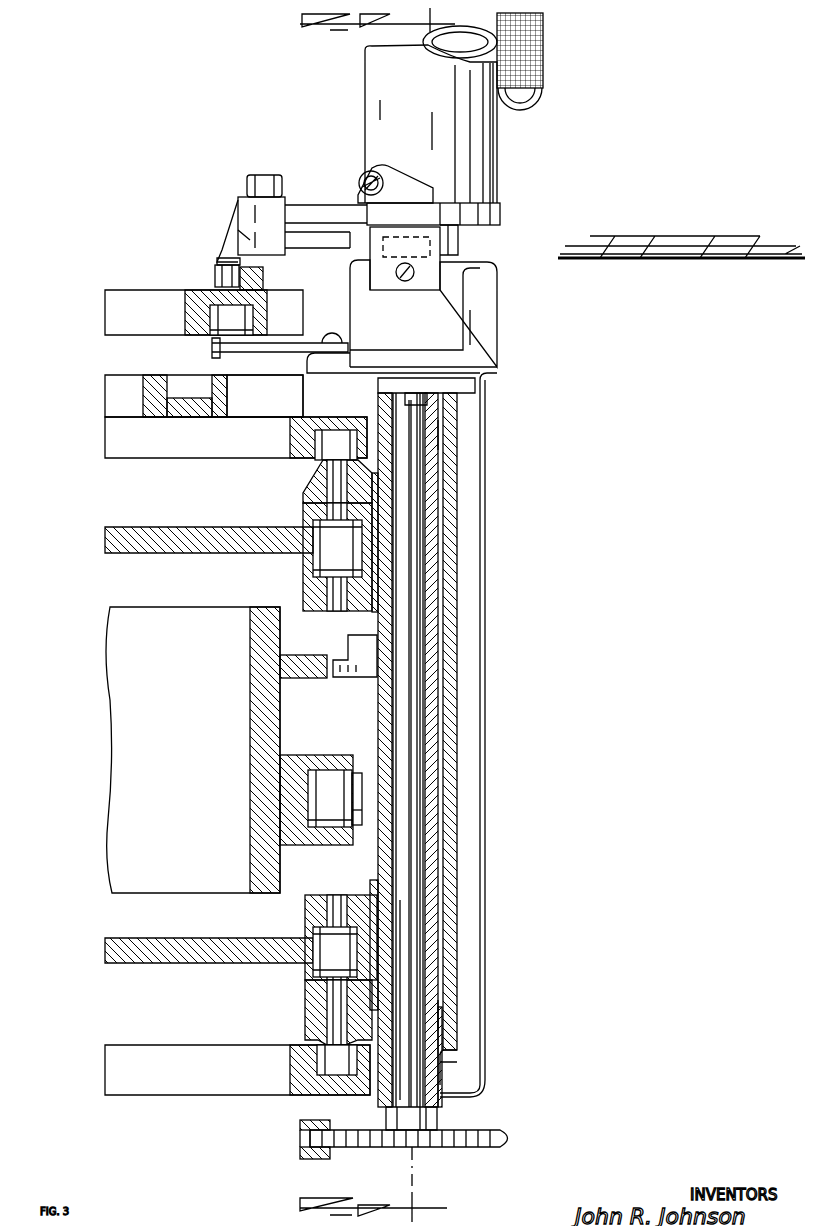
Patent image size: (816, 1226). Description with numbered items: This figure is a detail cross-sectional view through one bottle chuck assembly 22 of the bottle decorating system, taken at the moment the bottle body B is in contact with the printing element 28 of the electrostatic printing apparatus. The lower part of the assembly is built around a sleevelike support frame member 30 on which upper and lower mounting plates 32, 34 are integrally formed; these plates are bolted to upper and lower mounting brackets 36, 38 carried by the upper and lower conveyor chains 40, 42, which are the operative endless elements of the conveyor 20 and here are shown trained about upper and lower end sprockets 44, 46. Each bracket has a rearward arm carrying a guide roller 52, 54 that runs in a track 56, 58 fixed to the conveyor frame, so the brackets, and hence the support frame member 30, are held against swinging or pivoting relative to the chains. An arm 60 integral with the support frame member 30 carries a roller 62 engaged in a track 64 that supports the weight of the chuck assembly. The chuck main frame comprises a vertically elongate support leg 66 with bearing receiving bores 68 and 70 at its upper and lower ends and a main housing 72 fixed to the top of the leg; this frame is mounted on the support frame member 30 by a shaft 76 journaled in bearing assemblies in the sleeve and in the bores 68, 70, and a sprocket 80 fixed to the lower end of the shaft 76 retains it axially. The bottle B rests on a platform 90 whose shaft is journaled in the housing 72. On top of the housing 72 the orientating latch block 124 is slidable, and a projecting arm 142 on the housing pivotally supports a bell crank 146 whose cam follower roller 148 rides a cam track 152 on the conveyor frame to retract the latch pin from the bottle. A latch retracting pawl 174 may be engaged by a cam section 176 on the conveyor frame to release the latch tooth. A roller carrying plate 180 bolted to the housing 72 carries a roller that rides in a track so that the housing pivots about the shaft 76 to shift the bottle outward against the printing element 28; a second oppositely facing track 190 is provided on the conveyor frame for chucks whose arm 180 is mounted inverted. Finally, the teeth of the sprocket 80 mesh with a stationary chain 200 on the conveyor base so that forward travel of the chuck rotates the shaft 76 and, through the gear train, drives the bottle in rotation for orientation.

The bottle body B is at (385, 75).
The endless conveyor 20 is at (205, 717).
The bottle chuck assembly 22 is at (497, 395).
The printing element 28 is at (545, 70).
The sleevelike support frame member 30 is at (430, 691).
The upper mounting plate 32 is at (376, 617).
The lower mounting plate 34 is at (383, 890).
The upper mounting bracket 36 is at (325, 508).
The lower mounting bracket 38 is at (320, 1005).
The upper conveyor chain 40 is at (335, 565).
The lower conveyor chain 42 is at (313, 935).
The upper end sprocket 44 is at (150, 535).
The lower end sprocket 46 is at (125, 940).
The guide roller 52 is at (335, 447).
The guide roller 54 is at (330, 1055).
The track 56 is at (310, 452).
The track 58 is at (300, 1080).
The arm 60 is at (378, 765).
The roller 62 is at (333, 790).
The track 64 is at (312, 835).
The support leg portion 66 is at (487, 745).
The bearing receiving bore 68 is at (418, 393).
The bearing receiving bore 70 is at (442, 1077).
The main housing 72 is at (483, 322).
The shaft 76 is at (405, 632).
The sprocket 80 is at (497, 1135).
The platform 90 is at (503, 213).
The block 124 is at (440, 184).
The projecting arm 142 is at (322, 240).
The bell crank 146 is at (338, 165).
The cam follower roller 148 is at (222, 262).
The cam track 152 is at (240, 277).
The latch retracting pawl 174 is at (357, 668).
The cam section 176 is at (303, 658).
The roller carrying plate 180 is at (283, 352).
The second oppositely facing track 190 is at (152, 395).
The stationary chain 200 is at (305, 1147).